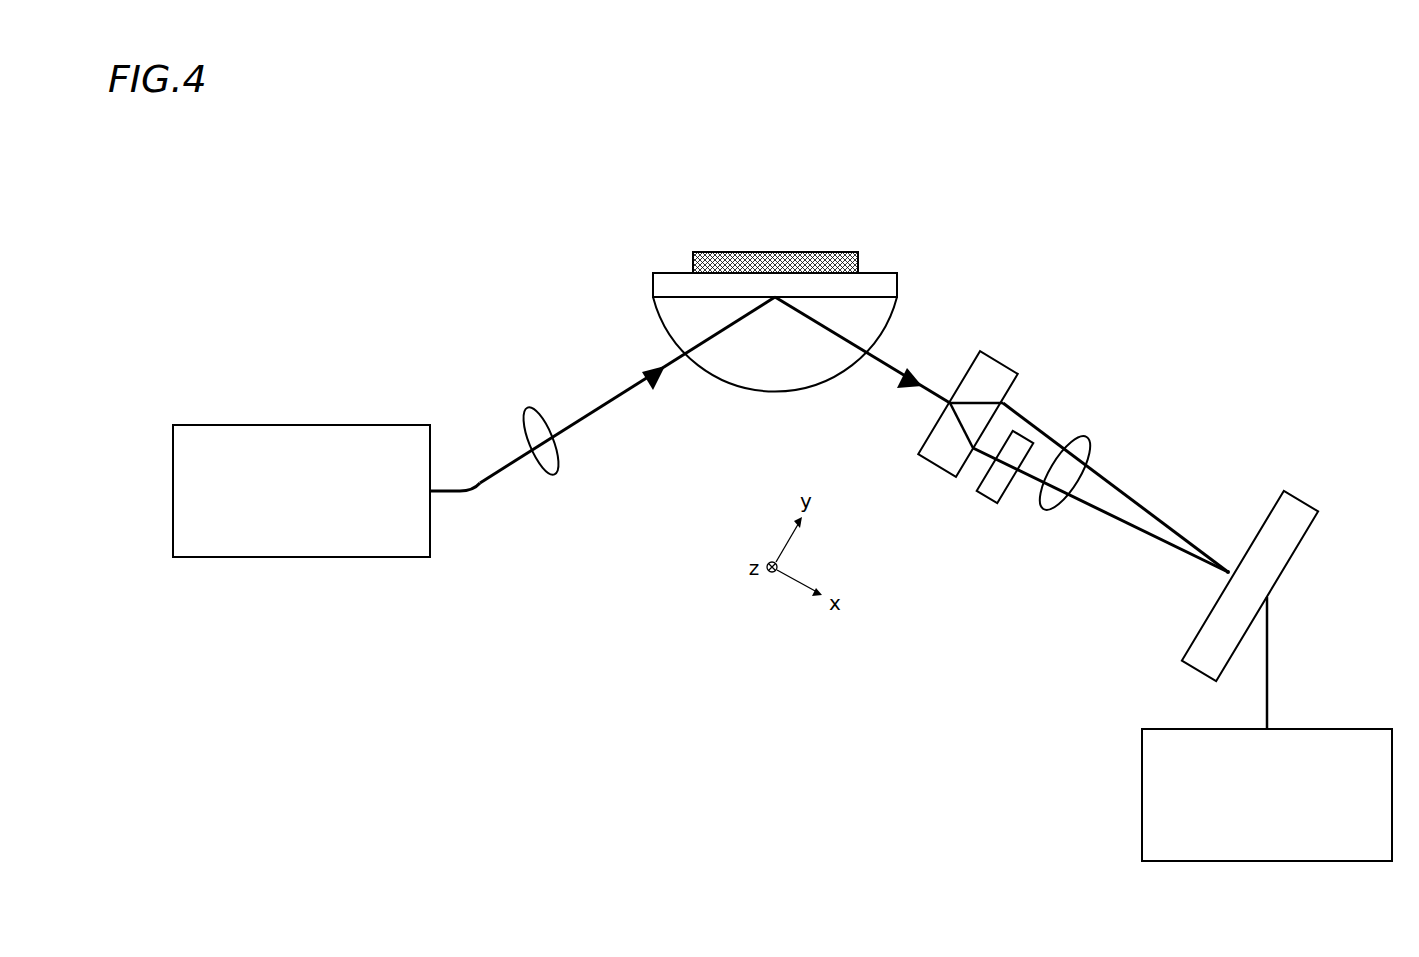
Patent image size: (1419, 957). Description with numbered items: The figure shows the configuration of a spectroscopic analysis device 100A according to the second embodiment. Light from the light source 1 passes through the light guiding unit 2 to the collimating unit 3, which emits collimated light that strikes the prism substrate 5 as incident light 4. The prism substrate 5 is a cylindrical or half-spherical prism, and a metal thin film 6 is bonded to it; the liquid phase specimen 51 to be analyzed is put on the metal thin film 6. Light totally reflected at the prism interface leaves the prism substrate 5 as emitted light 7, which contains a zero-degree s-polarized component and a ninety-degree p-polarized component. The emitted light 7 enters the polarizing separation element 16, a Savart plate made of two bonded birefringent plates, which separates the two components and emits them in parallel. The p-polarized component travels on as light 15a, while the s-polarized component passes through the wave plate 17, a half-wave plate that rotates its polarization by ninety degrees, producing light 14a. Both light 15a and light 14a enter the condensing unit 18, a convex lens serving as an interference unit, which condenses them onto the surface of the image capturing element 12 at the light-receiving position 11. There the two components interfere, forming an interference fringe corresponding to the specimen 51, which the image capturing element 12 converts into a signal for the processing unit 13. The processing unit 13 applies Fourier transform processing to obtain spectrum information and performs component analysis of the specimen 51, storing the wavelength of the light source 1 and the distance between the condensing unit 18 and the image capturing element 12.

The spectroscopic analysis device 100A is at (1172, 258).
The light source 1 is at (329, 423).
The light guiding unit 2 is at (489, 480).
The collimating unit 3 is at (522, 418).
The incident light 4 is at (620, 396).
The prism substrate 5 is at (780, 395).
The metal thin film 6 is at (876, 273).
The liquid phase specimen 51 is at (818, 252).
The emitted light 7 is at (902, 359).
The polarizing separation element 16 is at (999, 362).
The light of the 90° polarized light component 15a is at (1046, 426).
The light of the 0° polarized light component converted into the 90° polarized light 14a is at (1029, 484).
The wave plate 17 is at (990, 500).
The condensing unit 18 is at (1078, 438).
The light receiving position 11 is at (1229, 567).
The image capturing element 12 is at (1308, 506).
The processing unit 13 is at (1345, 728).